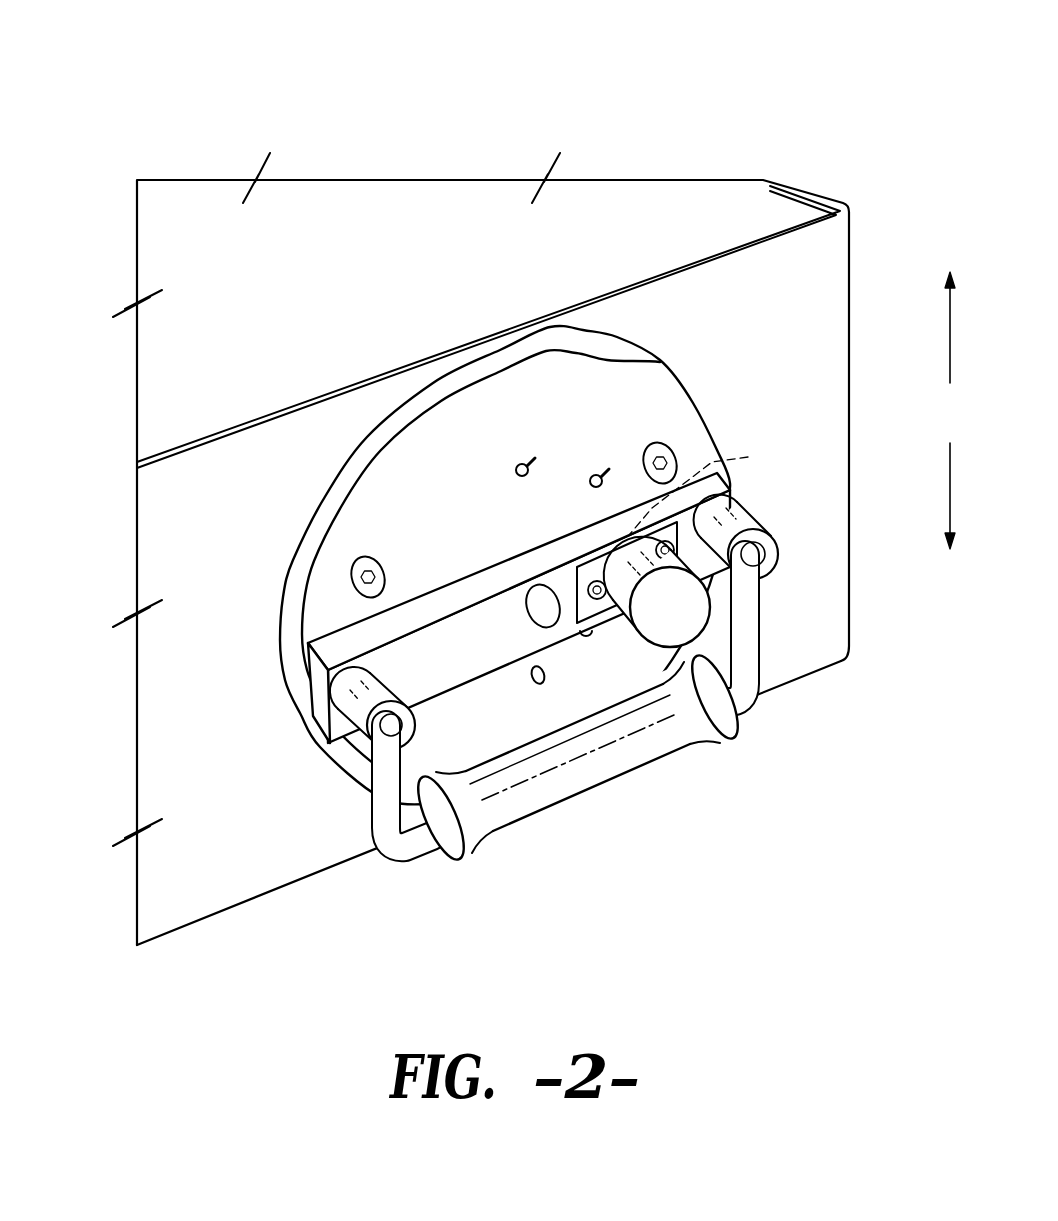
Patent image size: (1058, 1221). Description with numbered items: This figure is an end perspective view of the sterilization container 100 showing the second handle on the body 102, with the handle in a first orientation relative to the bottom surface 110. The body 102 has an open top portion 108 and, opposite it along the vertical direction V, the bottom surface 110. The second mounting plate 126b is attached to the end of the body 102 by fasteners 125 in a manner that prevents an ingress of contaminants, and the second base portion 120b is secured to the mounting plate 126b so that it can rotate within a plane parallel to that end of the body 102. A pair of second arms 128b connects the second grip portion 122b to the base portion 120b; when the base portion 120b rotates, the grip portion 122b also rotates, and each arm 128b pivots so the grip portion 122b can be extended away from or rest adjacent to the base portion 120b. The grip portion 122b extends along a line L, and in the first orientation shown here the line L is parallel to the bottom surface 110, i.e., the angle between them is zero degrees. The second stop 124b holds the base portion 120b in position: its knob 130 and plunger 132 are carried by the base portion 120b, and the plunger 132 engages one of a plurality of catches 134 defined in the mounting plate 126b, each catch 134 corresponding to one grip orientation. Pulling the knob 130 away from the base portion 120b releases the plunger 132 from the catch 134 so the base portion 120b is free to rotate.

The sterilization container 100 is at (347, 84).
The body 102 is at (827, 291).
The open top portion 108 is at (188, 466).
The bottom surface 110 is at (211, 936).
The second mounting plate 126b is at (647, 373).
The fasteners 125 is at (352, 596).
The catches 134 is at (529, 462).
The second base portion 120b is at (453, 665).
The plunger 132 is at (689, 532).
The knob 130 is at (660, 630).
The second stop 124b is at (692, 613).
The second arms 128b is at (412, 847).
The second grip portion 122b is at (578, 757).
The line L is at (637, 727).
The vertical direction V is at (949, 410).